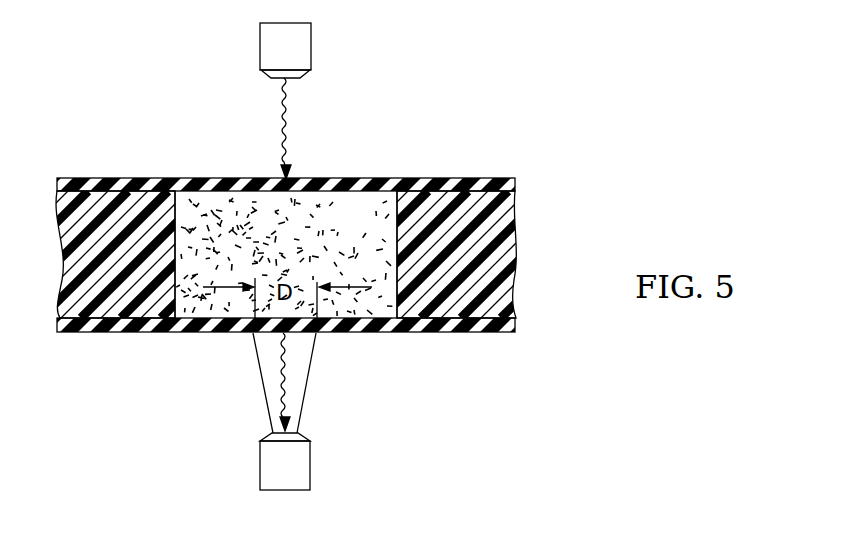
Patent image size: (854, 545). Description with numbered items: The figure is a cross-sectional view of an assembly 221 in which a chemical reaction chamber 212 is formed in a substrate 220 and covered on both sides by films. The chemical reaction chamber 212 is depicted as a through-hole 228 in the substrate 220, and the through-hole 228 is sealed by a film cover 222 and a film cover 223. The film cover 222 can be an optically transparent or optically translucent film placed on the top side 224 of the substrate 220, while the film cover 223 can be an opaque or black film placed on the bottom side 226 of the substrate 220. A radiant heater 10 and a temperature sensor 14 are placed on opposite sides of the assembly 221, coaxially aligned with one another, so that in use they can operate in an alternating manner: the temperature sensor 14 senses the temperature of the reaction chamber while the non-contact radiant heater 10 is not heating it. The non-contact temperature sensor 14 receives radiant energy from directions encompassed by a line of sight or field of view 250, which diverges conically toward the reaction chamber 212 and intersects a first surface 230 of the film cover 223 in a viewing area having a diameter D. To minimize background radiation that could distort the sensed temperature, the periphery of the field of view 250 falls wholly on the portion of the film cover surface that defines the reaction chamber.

The radiant heater 10 is at (266, 75).
The temperature sensor 14 is at (304, 438).
The chemical reaction chamber 212 is at (337, 197).
The substrate 220 is at (505, 237).
The assembly 221 is at (529, 211).
The film cover 222 is at (95, 188).
The film cover 223 is at (193, 333).
The top side 224 is at (432, 191).
The bottom side 226 is at (107, 322).
The through-hole 228 is at (178, 222).
The first surface 230 is at (323, 335).
The field of view 250 is at (257, 367).